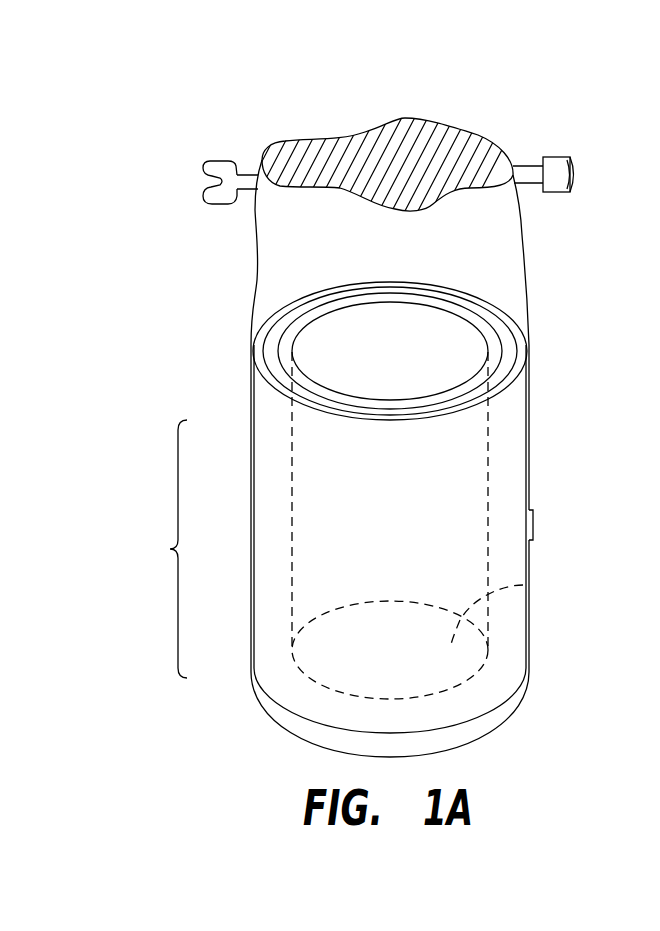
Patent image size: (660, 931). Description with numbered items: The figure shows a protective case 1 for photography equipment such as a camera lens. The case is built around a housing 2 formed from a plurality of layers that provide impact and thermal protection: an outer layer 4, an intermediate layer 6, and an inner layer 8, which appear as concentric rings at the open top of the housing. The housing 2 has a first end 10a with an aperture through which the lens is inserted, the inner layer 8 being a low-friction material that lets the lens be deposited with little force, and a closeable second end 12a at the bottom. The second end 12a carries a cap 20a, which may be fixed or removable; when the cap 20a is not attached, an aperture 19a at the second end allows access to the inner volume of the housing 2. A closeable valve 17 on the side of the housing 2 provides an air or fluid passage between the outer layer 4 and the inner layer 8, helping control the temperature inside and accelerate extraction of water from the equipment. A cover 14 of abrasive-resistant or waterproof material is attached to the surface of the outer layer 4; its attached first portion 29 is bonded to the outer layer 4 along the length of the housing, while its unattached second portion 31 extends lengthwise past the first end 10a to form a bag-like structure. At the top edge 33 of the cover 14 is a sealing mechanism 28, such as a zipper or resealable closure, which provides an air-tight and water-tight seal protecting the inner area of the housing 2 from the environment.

The protective case 1 is at (212, 267).
The housing 2 is at (270, 520).
The outer layer 4 is at (520, 352).
The intermediate layer 6 is at (507, 348).
The inner layer 8 is at (475, 322).
The first end 10a is at (318, 354).
The second end 12a is at (497, 727).
The cover 14 is at (530, 460).
The valve 17 is at (533, 527).
The aperture 19a is at (523, 584).
The cap 20a is at (270, 706).
The sealing mechanism 28 is at (313, 165).
The first portion 29 is at (165, 549).
The second portion 31 is at (498, 243).
The top edge 33 is at (432, 126).